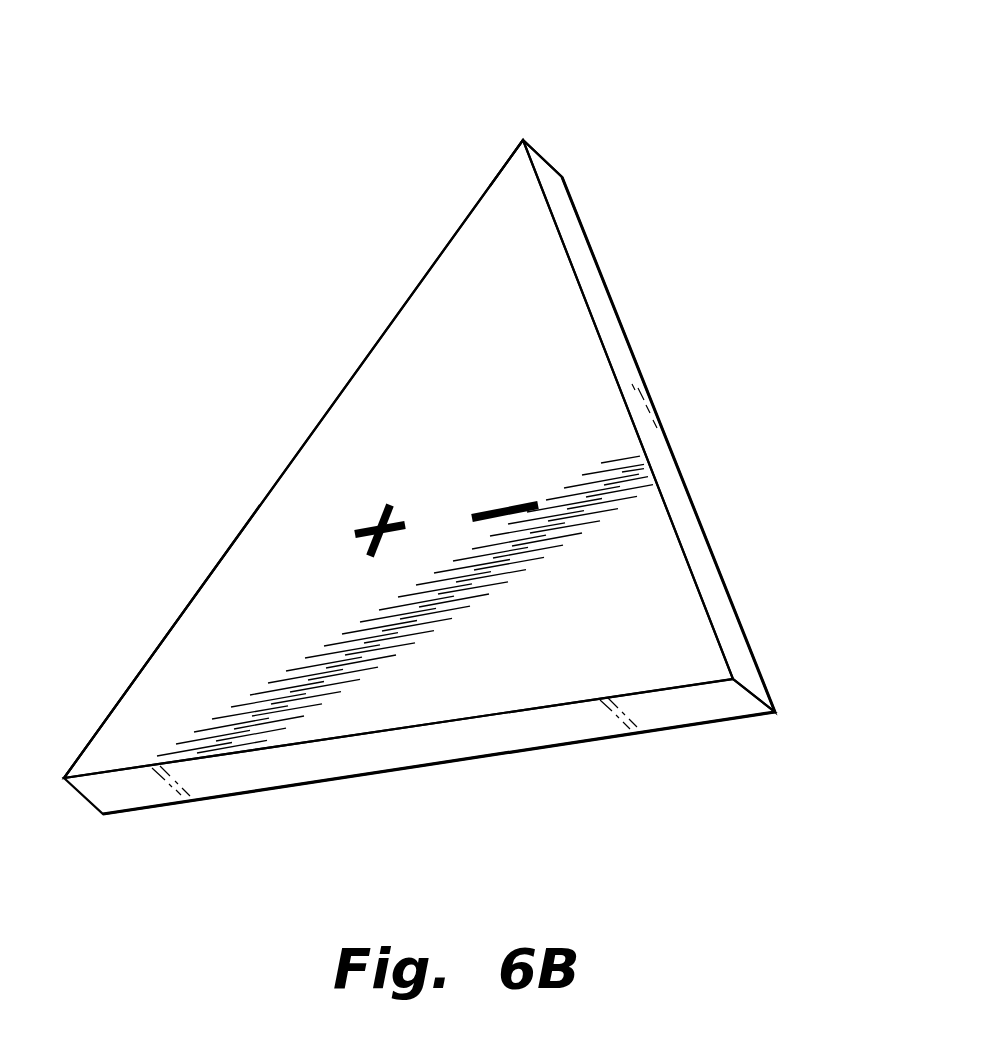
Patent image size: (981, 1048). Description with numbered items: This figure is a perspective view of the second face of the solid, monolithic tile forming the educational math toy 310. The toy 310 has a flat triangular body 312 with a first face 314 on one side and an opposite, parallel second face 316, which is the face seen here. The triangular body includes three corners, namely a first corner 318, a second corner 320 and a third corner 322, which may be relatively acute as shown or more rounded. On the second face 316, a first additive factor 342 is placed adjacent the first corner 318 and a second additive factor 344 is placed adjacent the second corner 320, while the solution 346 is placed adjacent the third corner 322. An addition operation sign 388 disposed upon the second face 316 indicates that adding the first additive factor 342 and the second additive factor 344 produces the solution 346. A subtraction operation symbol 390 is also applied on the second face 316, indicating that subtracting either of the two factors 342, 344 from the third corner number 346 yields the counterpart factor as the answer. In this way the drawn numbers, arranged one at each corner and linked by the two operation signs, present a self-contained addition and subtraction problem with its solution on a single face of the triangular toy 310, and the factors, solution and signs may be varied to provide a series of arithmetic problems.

The educational math toy 310 is at (199, 105).
The flat triangular body 312 is at (335, 397).
The first face 314 is at (300, 483).
The second face 316 is at (250, 566).
The first corner 318 is at (739, 660).
The second corner 320 is at (83, 742).
The third corner 322 is at (502, 167).
The first additive factor 342 is at (665, 653).
The second additive factor 344 is at (172, 674).
The solution 346 is at (515, 273).
The addition operation sign 388 is at (384, 505).
The subtraction operation symbol 390 is at (520, 503).